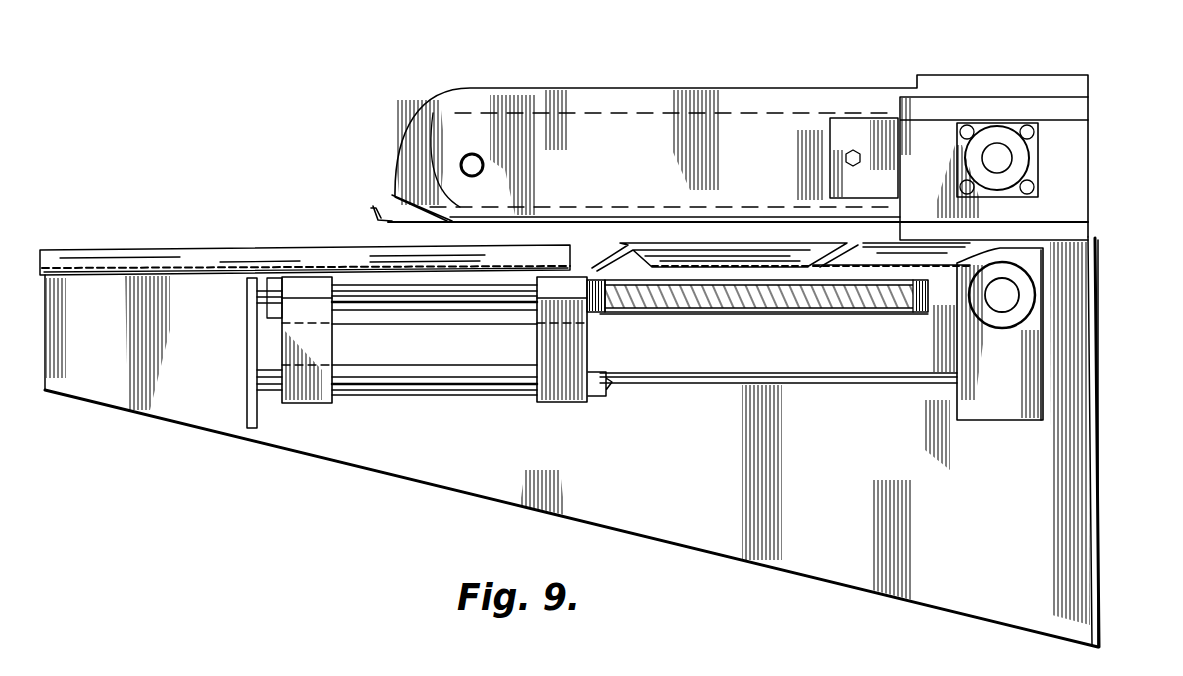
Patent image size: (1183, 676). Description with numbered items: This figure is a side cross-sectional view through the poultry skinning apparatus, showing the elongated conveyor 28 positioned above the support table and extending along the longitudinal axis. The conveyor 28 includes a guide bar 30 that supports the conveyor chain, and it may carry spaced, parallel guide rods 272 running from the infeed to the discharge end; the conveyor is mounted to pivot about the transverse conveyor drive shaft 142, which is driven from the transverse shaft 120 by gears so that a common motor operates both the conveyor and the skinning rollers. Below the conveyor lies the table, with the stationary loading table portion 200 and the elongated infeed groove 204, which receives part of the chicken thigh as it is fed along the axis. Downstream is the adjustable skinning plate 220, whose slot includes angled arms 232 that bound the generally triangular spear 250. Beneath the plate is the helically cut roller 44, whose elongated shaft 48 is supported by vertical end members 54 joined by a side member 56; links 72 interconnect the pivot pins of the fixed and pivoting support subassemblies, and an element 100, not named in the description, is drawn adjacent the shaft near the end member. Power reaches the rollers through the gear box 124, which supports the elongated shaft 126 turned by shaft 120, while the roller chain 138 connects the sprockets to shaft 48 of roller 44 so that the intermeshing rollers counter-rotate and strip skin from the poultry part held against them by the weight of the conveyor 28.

The elongated conveyor 28 is at (605, 88).
The guide bar 30 is at (520, 223).
The helically cut roller 44 is at (748, 300).
The elongated shaft 48 is at (387, 297).
The vertical end members 54 is at (305, 290).
The side member 56 is at (438, 345).
The links 72 is at (606, 384).
The screw nut 100 is at (592, 300).
The transverse shaft 120 is at (1002, 297).
The gear box 124 is at (1020, 420).
The elongated shaft 126 is at (850, 385).
The roller chain 138 is at (248, 312).
The transverse conveyor drive shaft 142 is at (1000, 158).
The stationary loading table portion 200 is at (135, 248).
The infeed groove 204 is at (325, 250).
The adjustable skinning plate 220 is at (668, 255).
The angled arms 232 is at (812, 244).
The spear 250 is at (860, 258).
The guide rods 272 is at (380, 205).